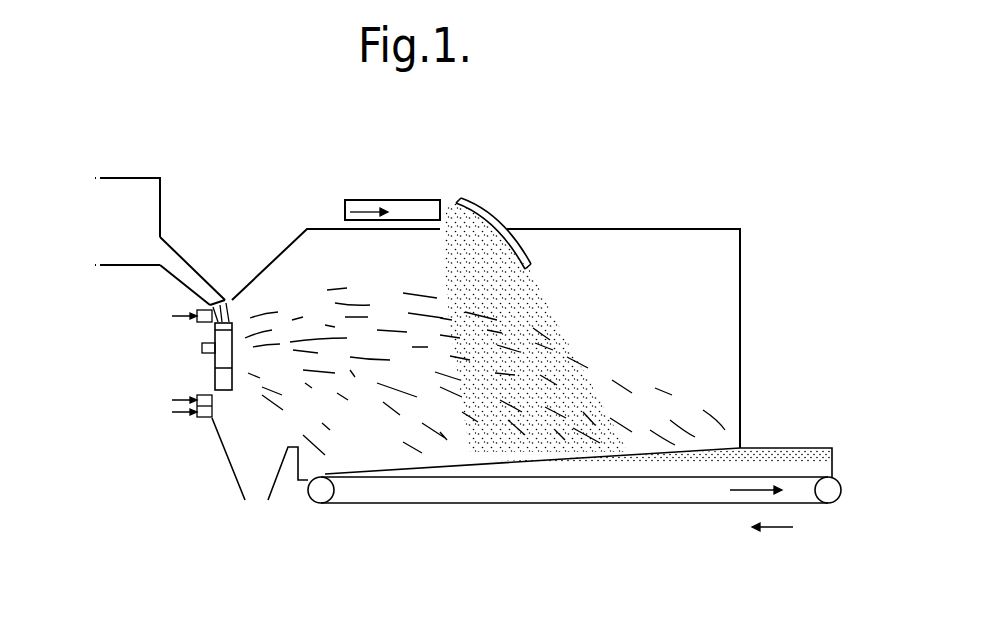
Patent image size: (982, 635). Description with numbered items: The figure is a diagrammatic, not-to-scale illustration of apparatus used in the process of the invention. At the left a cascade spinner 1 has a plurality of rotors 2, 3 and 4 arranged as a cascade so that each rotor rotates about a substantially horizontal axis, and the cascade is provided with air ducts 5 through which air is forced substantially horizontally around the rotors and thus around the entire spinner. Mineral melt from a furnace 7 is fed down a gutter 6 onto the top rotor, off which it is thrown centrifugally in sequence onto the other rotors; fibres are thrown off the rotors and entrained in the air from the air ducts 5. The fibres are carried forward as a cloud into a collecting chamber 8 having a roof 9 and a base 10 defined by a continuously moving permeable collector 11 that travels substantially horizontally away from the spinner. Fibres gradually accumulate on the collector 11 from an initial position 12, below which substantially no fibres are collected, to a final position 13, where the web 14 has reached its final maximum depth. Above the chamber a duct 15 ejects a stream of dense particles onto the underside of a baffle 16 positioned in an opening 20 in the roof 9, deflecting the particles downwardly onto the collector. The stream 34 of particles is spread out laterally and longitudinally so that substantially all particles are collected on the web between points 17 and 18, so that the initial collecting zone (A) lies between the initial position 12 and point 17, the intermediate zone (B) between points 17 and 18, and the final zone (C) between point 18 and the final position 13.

The cascade spinner 1 is at (253, 354).
The rotor 2 is at (238, 307).
The rotor 3 is at (218, 340).
The rotor 4 is at (218, 377).
The air ducts 5 is at (198, 310).
The gutter 6 is at (177, 260).
The furnace 7 is at (137, 193).
The collecting chamber 8 is at (326, 250).
The roof 9 is at (608, 230).
The base 10 is at (330, 475).
The conveyor belt 11 is at (535, 505).
The initial position 12 is at (352, 478).
The final position 13 is at (713, 478).
The web 14 is at (792, 458).
The duct 15 is at (400, 200).
The baffle 16 is at (488, 208).
The point 17 is at (475, 478).
The point 18 is at (605, 478).
The opening 20 is at (448, 227).
The stream of particles 34 is at (625, 348).